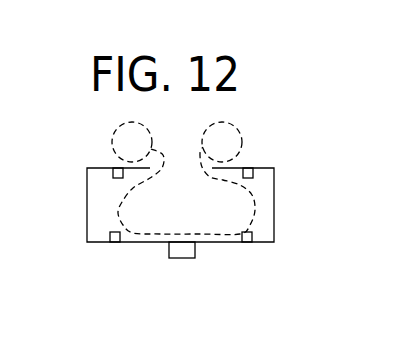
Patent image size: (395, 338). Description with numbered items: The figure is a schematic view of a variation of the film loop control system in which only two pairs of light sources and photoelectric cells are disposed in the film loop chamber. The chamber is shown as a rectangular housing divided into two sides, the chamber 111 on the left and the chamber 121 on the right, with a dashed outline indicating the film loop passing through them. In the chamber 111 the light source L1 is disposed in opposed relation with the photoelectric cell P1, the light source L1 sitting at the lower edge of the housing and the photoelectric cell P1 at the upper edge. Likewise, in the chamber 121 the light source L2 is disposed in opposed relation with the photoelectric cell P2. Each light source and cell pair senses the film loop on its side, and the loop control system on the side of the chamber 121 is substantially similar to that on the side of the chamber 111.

The chamber 111 is at (98, 205).
The chamber 121 is at (263, 205).
The photoelectric cell P1 is at (116, 170).
The photoelectric cell P2 is at (248, 172).
The light source L1 is at (113, 242).
The light source L2 is at (246, 242).